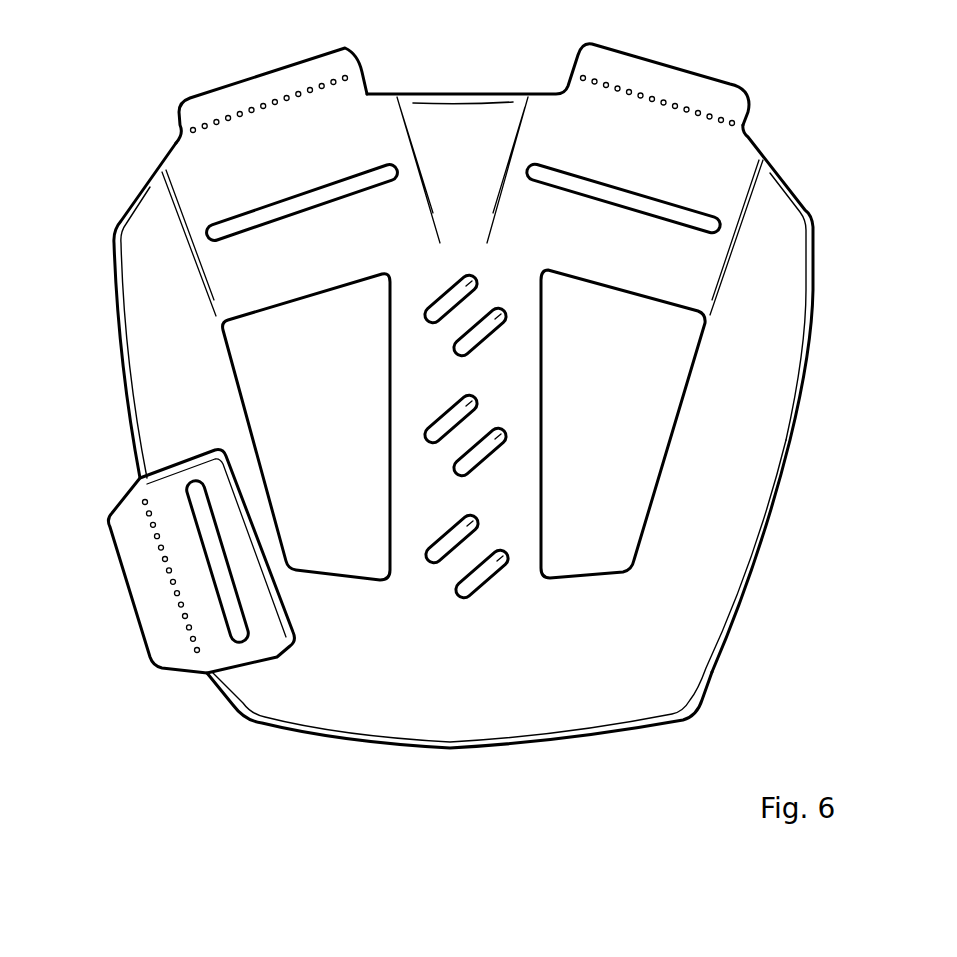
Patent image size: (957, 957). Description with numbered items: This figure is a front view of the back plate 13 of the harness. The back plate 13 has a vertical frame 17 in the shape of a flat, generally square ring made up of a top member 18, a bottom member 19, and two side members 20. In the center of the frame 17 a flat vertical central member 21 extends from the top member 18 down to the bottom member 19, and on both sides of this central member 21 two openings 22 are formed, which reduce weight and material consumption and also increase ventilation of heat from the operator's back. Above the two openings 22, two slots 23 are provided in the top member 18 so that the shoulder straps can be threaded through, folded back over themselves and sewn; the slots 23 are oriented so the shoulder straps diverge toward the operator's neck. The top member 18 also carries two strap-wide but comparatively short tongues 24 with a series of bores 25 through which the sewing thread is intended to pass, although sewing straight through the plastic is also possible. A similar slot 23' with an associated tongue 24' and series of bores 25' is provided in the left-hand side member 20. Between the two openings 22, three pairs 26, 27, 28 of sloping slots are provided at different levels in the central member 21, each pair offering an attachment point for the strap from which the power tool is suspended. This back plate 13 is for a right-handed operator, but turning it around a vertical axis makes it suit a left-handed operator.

The back plate 13 is at (106, 320).
The vertical frame 17 is at (783, 265).
The top member 18 is at (457, 131).
The bottom member 19 is at (408, 717).
The side members 20 is at (163, 440).
The vertical central member 21 is at (378, 489).
The openings 22 is at (297, 383).
The slots 23 is at (459, 176).
The slot 23' is at (202, 614).
The tongues 24 is at (465, 91).
The tongue 24' is at (184, 561).
The bores 25 is at (463, 82).
The bores 25' is at (132, 576).
The pair of sloping slots 26 is at (473, 520).
The pair of sloping slots 27 is at (470, 408).
The pair of sloping slots 28 is at (470, 283).